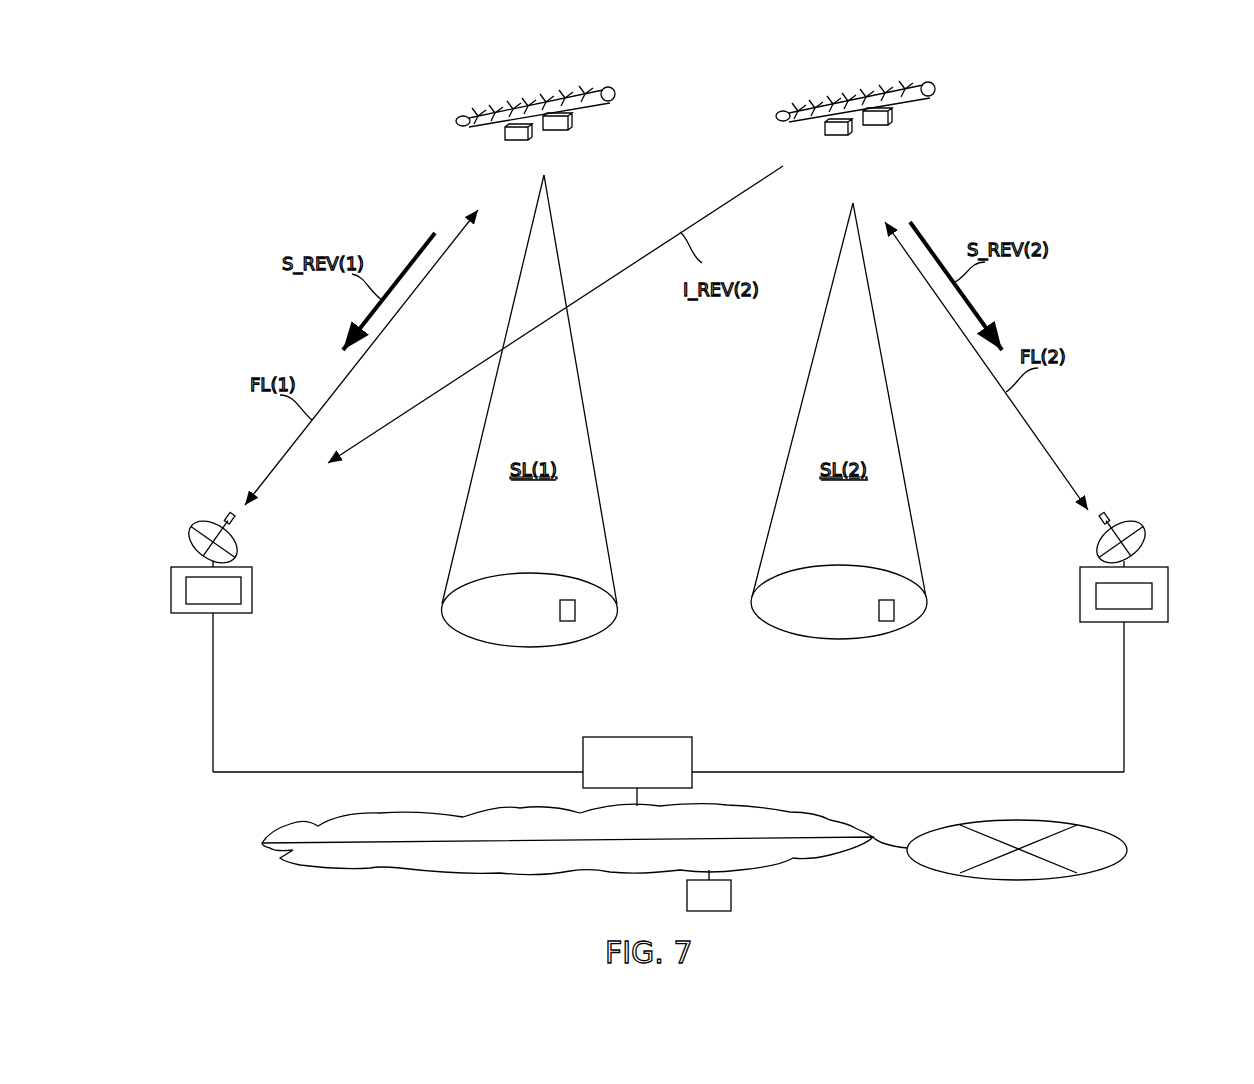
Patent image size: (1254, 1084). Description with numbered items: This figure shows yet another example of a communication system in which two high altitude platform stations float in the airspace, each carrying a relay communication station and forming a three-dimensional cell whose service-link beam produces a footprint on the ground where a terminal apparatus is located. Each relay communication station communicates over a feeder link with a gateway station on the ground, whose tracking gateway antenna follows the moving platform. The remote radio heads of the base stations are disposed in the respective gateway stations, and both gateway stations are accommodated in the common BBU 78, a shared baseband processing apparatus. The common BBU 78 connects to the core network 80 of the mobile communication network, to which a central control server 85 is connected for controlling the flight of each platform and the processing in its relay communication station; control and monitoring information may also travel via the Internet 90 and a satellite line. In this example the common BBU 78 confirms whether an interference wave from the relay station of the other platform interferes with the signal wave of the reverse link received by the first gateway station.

The common BBU 78 is at (692, 757).
The core network 80 is at (368, 872).
The central control server 85 is at (687, 898).
The Internet 90 is at (1125, 838).